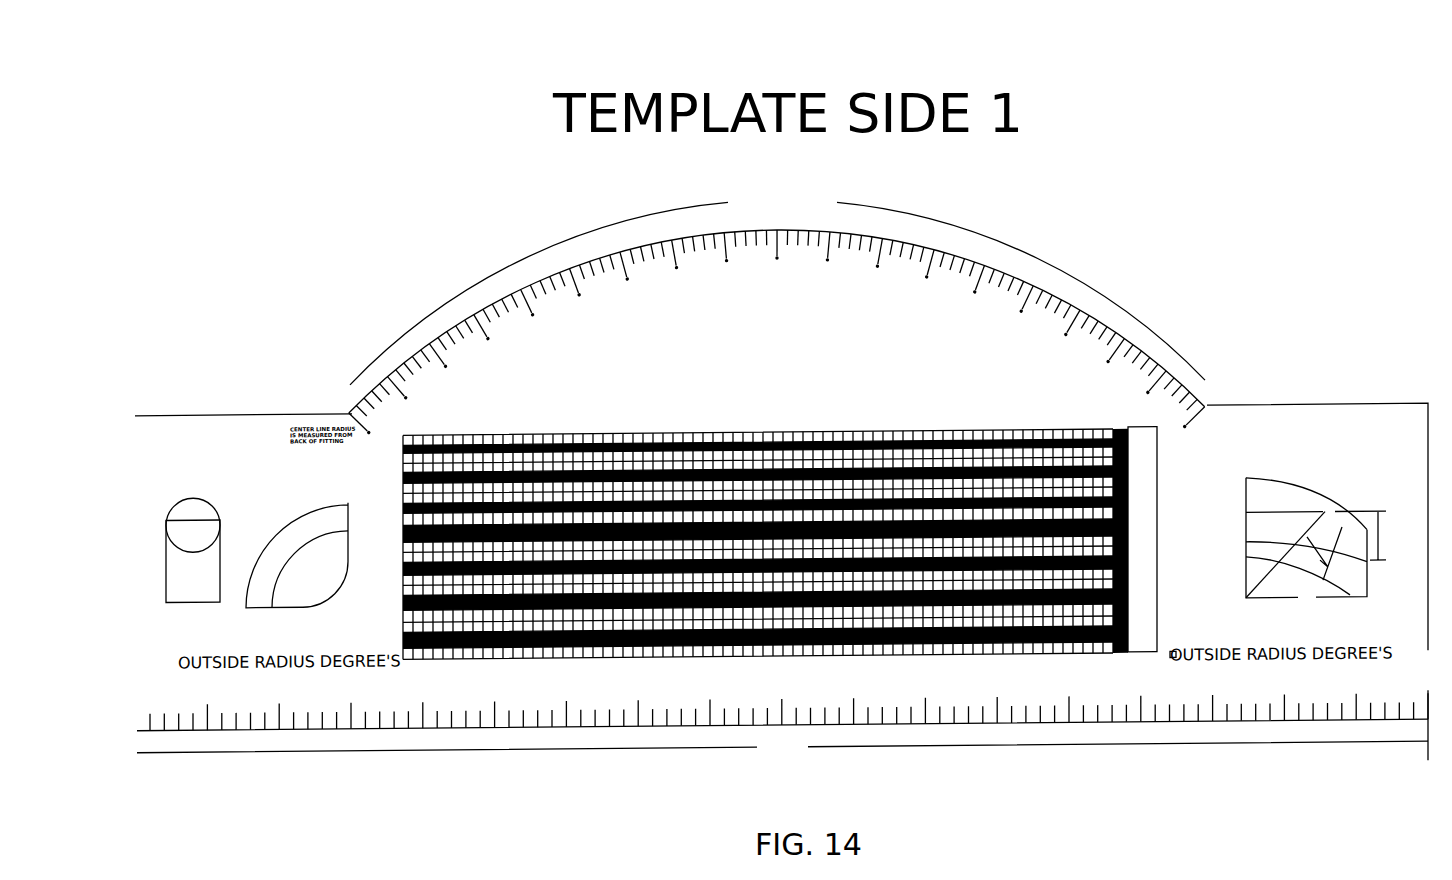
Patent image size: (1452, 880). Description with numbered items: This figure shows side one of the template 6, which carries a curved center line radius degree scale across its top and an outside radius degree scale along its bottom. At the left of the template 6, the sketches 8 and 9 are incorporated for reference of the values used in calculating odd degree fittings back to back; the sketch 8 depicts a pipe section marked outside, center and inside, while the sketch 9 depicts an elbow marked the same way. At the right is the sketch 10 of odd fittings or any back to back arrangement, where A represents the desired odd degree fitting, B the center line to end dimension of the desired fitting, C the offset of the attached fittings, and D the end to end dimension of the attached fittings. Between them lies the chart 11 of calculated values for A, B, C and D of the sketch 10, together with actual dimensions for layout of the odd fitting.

The template 6 is at (797, 237).
The sketch 8 is at (168, 517).
The sketch 9 is at (320, 506).
The sketch of odd fittings back to back 10 is at (1290, 499).
The chart of calculated values 11 is at (1157, 525).